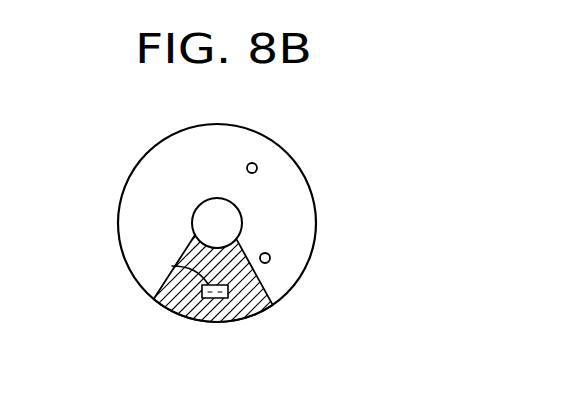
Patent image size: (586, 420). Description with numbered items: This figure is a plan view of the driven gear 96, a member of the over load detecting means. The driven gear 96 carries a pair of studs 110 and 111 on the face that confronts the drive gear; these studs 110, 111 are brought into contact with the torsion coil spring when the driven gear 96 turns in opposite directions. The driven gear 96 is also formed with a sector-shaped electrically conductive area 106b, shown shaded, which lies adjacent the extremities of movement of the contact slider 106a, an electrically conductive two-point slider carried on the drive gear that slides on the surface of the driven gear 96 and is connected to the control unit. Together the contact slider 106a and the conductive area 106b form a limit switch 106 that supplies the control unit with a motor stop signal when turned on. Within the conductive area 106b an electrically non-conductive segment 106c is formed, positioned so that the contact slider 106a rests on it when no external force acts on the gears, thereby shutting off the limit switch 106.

The driven gear 96 is at (316, 199).
The stud 111 is at (256, 164).
The stud 110 is at (270, 258).
The limit switch 106 is at (217, 291).
The contact slider 106a is at (210, 300).
The conductive area 106b is at (180, 295).
The non-conductive segment 106c is at (172, 266).